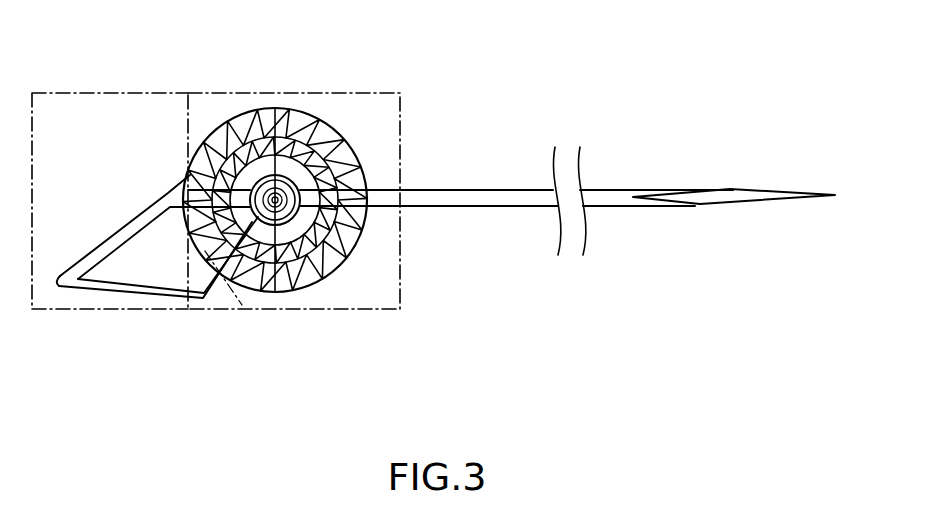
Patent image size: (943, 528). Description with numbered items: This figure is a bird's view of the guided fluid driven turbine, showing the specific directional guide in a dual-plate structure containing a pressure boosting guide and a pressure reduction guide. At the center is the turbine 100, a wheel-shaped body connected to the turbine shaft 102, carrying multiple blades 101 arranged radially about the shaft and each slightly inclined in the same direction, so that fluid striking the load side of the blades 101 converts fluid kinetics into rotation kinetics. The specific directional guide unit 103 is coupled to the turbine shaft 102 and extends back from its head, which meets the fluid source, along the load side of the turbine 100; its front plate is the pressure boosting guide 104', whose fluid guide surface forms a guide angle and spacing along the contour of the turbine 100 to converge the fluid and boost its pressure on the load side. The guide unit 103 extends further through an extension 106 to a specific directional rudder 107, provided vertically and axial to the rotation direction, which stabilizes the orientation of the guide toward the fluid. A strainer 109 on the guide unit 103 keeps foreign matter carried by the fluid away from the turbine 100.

The turbine 100 is at (223, 93).
The blades 101 is at (345, 207).
The turbine shaft 102 is at (276, 200).
The specific directional guide unit 103 is at (55, 309).
The pressure boosting guide 104' is at (153, 152).
The extension 106 is at (510, 199).
The specific directional rudder 107 is at (727, 197).
The strainer 109 is at (314, 130).